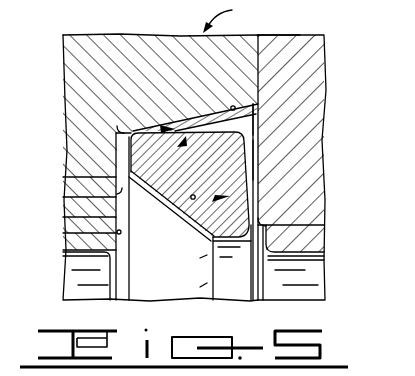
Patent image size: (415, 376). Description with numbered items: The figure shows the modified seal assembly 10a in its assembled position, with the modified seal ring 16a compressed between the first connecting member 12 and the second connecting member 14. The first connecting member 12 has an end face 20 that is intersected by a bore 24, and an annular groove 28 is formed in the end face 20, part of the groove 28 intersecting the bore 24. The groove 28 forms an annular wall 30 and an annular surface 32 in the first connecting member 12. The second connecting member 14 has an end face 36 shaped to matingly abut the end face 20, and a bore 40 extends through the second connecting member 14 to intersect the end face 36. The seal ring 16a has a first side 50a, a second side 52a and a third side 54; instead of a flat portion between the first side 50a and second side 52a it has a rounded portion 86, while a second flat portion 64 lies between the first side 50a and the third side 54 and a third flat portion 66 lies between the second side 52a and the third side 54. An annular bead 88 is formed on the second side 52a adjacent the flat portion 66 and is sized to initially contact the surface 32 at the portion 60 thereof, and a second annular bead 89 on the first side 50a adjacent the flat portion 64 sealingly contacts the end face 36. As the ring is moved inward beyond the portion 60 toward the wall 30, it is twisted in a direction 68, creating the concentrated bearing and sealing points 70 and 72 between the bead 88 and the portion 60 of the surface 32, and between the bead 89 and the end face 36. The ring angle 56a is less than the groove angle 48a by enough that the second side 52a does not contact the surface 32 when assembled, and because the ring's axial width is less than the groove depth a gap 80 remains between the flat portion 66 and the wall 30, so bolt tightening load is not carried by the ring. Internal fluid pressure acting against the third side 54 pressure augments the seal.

The modified seal assembly 10a is at (233, 18).
The first connecting member 12 is at (75, 50).
The second connecting member 14 is at (307, 75).
The modified seal ring 16a is at (197, 237).
The end face 20 is at (276, 35).
The bore 24 is at (90, 252).
The annular groove 28 is at (116, 217).
The annular wall 30 is at (116, 233).
The annular surface 32 is at (231, 106).
The end face 36 is at (250, 65).
The bore 40 is at (310, 255).
The groove angle 48a is at (143, 155).
The first side 50a is at (250, 160).
The second side 52a is at (195, 118).
The third side 54 is at (178, 217).
The ring angle 56a is at (170, 158).
The portion of the surface 60 is at (155, 128).
The second flat portion 64 is at (229, 245).
The third flat portion 66 is at (165, 158).
The direction 68 is at (196, 196).
The concentrated bearing and sealing point 70 is at (127, 130).
The concentrated bearing and sealing point 72 is at (259, 222).
The gap 80 is at (116, 197).
The rounded portion 86 is at (253, 125).
The annular bead 88 is at (113, 124).
The second annular bead 89 is at (310, 226).